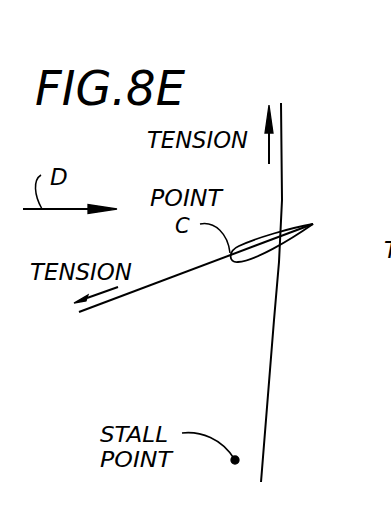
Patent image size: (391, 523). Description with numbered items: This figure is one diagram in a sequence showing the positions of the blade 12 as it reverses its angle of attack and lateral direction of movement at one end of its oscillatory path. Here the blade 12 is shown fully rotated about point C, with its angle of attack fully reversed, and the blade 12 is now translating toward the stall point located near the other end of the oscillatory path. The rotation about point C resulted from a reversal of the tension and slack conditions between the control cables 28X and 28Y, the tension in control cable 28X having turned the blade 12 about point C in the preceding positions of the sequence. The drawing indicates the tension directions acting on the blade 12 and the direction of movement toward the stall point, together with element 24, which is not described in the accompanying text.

The blade 12 is at (250, 261).
The tension line 24 is at (115, 302).
The control cable 28X is at (282, 183).
The control cable 28Y is at (274, 345).